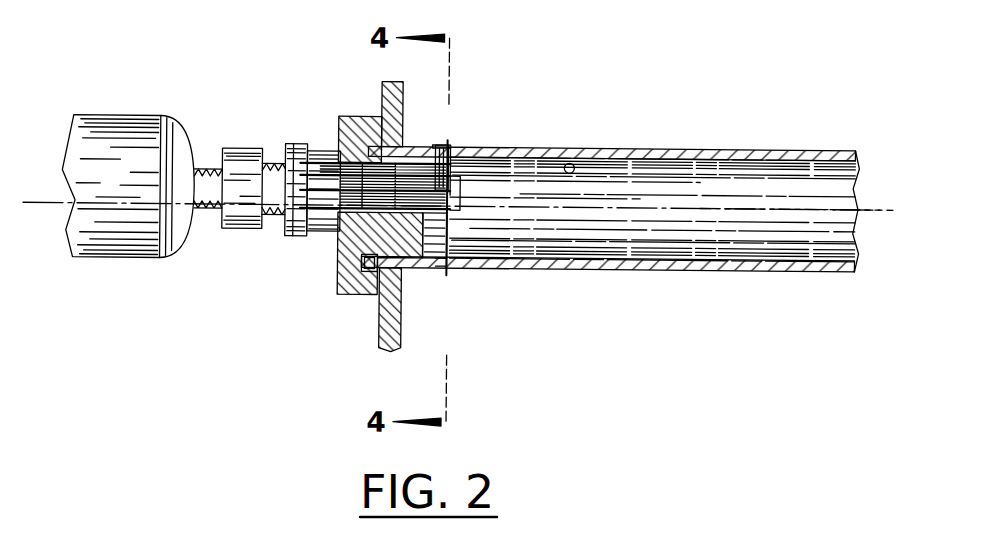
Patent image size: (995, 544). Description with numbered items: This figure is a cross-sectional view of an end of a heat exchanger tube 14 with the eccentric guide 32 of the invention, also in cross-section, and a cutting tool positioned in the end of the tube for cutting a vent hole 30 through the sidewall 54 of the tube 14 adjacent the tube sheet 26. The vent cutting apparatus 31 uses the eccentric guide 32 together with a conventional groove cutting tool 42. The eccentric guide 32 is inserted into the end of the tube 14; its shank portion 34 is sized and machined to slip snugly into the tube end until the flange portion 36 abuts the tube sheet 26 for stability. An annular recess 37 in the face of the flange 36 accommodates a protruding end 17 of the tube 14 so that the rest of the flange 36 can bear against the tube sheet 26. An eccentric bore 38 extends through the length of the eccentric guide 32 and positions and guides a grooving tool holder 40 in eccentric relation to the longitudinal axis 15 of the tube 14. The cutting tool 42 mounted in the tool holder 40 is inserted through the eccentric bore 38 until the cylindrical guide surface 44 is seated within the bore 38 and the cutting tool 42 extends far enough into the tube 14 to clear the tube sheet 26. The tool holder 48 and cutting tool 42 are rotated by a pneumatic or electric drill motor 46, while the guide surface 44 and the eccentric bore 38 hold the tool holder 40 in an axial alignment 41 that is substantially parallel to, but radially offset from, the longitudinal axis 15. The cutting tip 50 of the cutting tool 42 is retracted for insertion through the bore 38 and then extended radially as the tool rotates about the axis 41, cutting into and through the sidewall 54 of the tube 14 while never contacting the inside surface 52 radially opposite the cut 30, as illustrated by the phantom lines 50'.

The tube 14 is at (750, 148).
The longitudinal axis 15 is at (802, 206).
The protruding end 17 is at (378, 282).
The tube sheet 26 is at (403, 328).
The vent hole 30 is at (440, 146).
The vent cutting apparatus 31 is at (213, 132).
The eccentric guide 32 is at (338, 273).
The shank portion 34 is at (404, 268).
The flange portion 36 is at (371, 278).
The annular recess 37 is at (376, 272).
The eccentric bore 38 is at (450, 216).
The grooving tool holder 40 is at (294, 144).
The axial alignment 41 is at (693, 188).
The groove cutting tool 42 is at (452, 178).
The cylindrical guide surface 44 is at (348, 236).
The drill motor 46 is at (114, 118).
The tool holder 48 is at (356, 140).
The cutting tip 50 is at (472, 150).
The phantom lines 50' is at (475, 286).
The inside surface 52 is at (574, 167).
The sidewall 54 is at (692, 145).